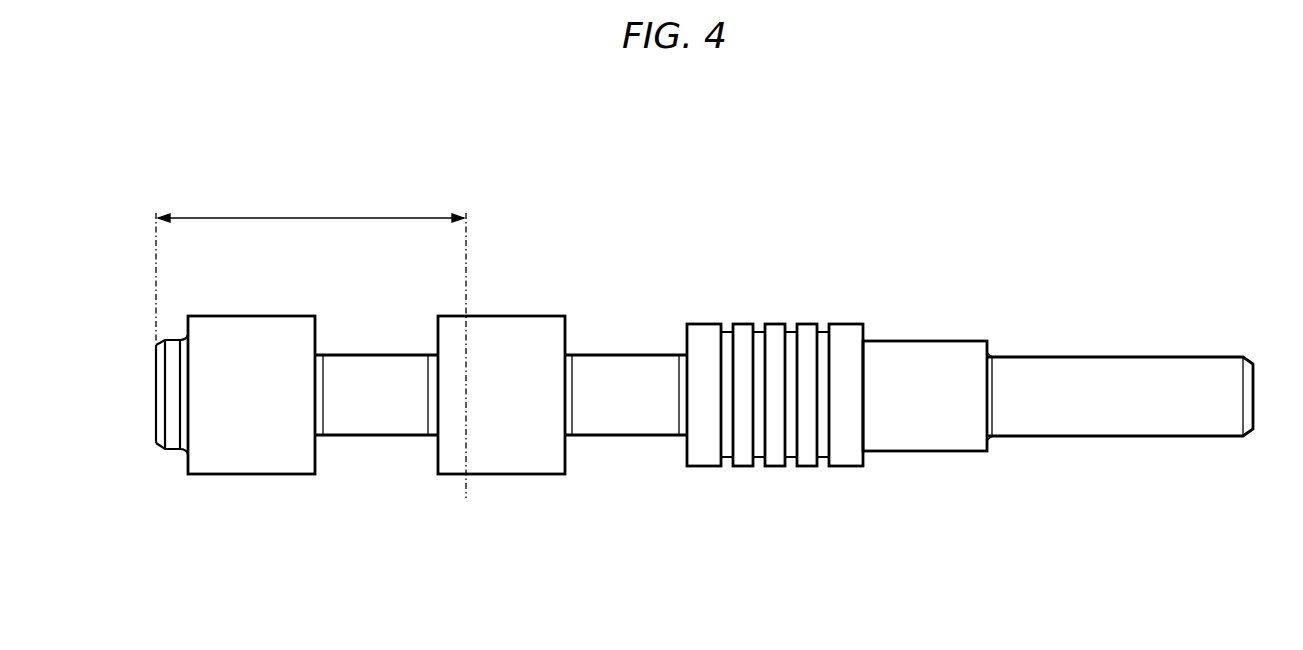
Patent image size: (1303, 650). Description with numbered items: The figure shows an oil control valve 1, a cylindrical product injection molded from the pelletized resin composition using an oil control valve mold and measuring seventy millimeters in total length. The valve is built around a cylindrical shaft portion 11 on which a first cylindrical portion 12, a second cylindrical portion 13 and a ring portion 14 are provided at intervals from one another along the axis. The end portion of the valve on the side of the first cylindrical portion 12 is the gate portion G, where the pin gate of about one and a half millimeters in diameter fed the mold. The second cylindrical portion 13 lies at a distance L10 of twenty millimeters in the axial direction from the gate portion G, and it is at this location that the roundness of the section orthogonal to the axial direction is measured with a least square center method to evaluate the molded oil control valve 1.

The oil control valve 1 is at (668, 341).
The cylindrical shaft portion 11 is at (627, 367).
The first cylindrical portion 12 is at (246, 453).
The second cylindrical portion 13 is at (513, 457).
The ring portion 14 is at (775, 457).
The gate portion G is at (156, 397).
The distance in axial direction from gate portion L10 is at (311, 343).